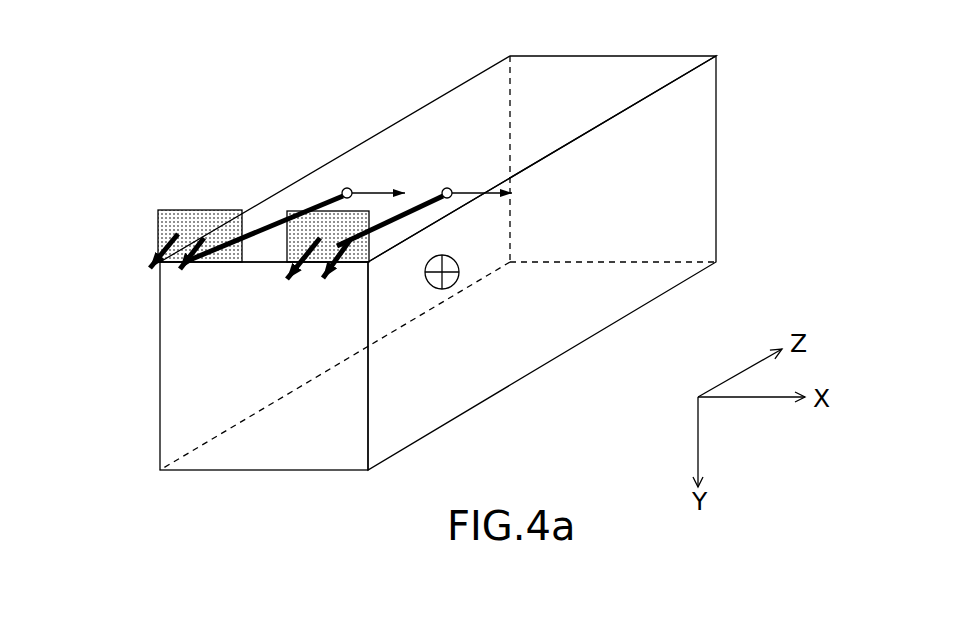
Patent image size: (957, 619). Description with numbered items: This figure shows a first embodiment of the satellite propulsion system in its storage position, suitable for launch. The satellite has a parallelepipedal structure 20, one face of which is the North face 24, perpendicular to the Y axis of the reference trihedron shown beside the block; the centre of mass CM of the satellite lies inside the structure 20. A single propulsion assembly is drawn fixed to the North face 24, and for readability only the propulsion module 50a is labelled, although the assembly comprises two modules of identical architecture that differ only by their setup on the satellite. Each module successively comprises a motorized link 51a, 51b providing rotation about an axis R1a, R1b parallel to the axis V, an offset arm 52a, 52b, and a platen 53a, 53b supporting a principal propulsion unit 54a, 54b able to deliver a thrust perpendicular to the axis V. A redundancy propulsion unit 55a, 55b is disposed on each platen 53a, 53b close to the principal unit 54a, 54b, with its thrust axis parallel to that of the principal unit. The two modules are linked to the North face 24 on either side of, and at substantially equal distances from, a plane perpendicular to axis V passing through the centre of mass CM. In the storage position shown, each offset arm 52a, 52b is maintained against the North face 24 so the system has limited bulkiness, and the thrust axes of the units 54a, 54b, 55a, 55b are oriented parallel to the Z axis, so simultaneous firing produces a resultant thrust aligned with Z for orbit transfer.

The parallelepipedal structure 20 is at (662, 90).
The North face 24 is at (602, 67).
The propulsion module 50a is at (264, 70).
The motorized link 51a is at (346, 188).
The motorized link 51b is at (448, 188).
The offset arm 52a is at (312, 210).
The offset arm 52b is at (396, 228).
The platen 53a is at (182, 208).
The platen 53b is at (360, 265).
The propulsion unit 54a is at (153, 267).
The propulsion unit 54b is at (321, 278).
The redundancy propulsion unit 55a is at (180, 273).
The redundancy propulsion unit 55b is at (289, 280).
The axis of rotation R1a is at (378, 188).
The axis of rotation R1b is at (512, 193).
The centre of mass CM is at (459, 281).